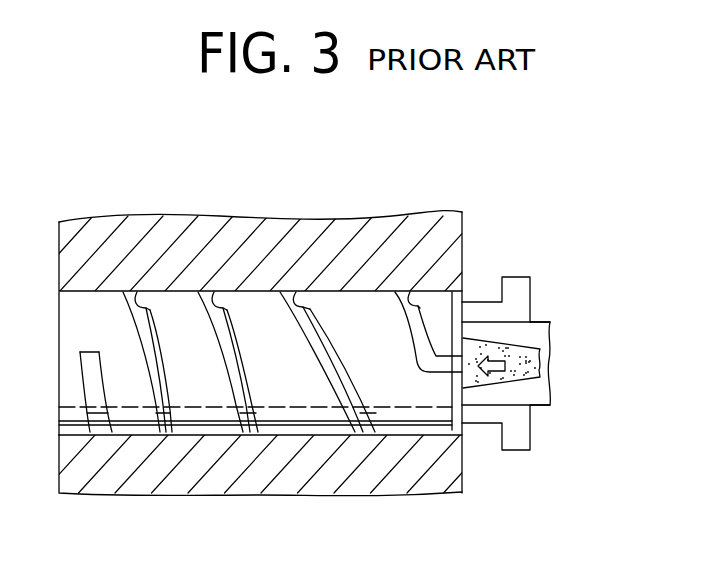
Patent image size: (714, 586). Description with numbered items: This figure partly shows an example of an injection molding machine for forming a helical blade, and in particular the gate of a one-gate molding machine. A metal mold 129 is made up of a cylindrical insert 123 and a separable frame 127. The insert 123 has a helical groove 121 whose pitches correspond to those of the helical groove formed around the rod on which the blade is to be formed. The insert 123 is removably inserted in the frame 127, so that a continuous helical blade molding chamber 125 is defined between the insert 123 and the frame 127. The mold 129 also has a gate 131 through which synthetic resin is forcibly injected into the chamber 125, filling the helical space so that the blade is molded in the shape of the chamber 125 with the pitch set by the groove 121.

The helical groove 121 is at (325, 335).
The cylindrical insert 123 is at (253, 300).
The helical blade molding chamber 125 is at (373, 430).
The separable frame 127 is at (455, 253).
The metal mold 129 is at (101, 208).
The gate 131 is at (483, 353).